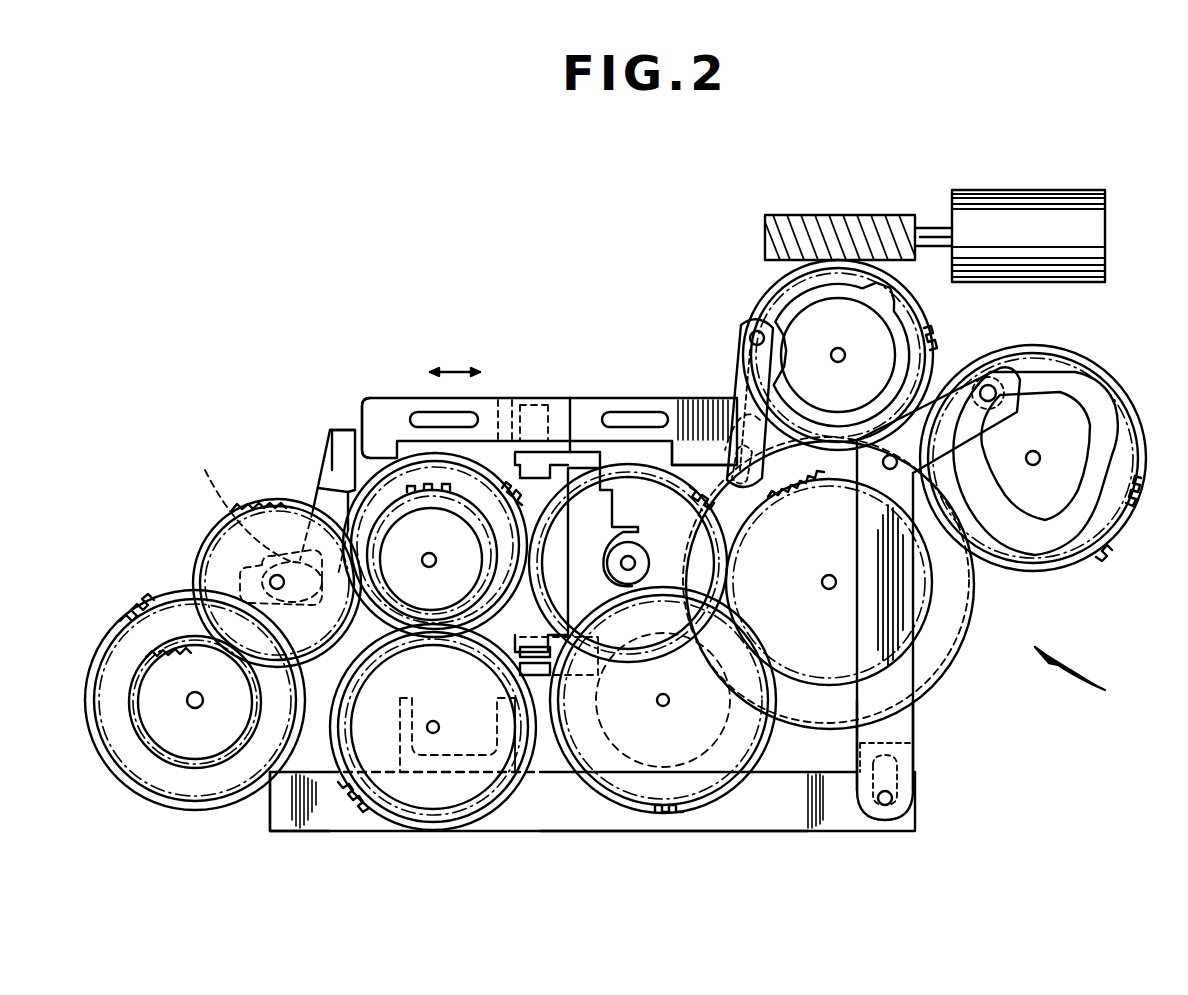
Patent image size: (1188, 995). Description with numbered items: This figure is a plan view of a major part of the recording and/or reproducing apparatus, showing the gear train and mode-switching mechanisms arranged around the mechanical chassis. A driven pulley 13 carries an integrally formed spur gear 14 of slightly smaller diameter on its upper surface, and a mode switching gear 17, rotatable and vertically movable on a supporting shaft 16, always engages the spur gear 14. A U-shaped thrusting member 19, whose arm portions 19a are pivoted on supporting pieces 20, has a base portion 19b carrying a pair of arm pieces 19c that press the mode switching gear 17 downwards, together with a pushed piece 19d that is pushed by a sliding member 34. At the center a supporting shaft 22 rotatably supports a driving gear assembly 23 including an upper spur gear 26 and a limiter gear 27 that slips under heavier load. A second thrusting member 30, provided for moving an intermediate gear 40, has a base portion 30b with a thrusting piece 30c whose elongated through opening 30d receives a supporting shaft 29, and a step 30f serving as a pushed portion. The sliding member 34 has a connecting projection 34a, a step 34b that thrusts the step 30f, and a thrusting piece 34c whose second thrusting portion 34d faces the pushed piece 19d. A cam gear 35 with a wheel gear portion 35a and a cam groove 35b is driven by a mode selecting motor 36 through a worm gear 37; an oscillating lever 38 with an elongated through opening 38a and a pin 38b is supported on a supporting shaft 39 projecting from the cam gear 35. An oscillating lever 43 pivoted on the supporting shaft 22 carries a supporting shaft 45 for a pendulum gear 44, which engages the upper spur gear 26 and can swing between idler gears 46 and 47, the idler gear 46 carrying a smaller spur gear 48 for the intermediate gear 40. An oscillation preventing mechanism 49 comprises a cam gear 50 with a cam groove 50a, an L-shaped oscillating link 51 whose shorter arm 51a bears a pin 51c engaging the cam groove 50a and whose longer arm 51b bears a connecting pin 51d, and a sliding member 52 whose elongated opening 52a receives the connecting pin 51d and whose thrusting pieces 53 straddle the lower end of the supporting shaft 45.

The driven pulley 13 is at (965, 628).
The spur gear 14 is at (927, 637).
The supporting shaft 16 is at (640, 560).
The mode switching gear 17 is at (686, 699).
The thrusting member 19 is at (585, 398).
The arm portions 19a is at (566, 398).
The base portion 19b is at (602, 606).
The arm pieces 19c is at (652, 508).
The pushed piece 19d is at (540, 405).
The supporting pieces 20 is at (540, 476).
The supporting shaft 22 is at (422, 557).
The driving gear assembly 23 is at (438, 398).
The upper spur gear 26 is at (387, 475).
The limiter gear 27 is at (427, 488).
The supporting shaft 29 is at (254, 502).
The thrusting member 30 is at (323, 483).
The base portion 30b is at (322, 486).
The thrusting piece 30c is at (239, 533).
The elongated through opening 30d is at (265, 565).
The step 30f is at (356, 418).
The sliding member 34 is at (610, 398).
The connecting projection 34a is at (724, 455).
The step 34b is at (356, 418).
The thrusting piece 34c is at (500, 400).
The second thrusting portion 34d is at (520, 398).
The cam gear 35 is at (772, 292).
The wheel gear portion 35a is at (756, 302).
The cam groove 35b is at (928, 342).
The mode selecting motor 36 is at (1038, 203).
The worm gear 37 is at (862, 222).
The oscillating lever 38 is at (750, 385).
The elongated through opening 38a is at (750, 486).
The pin 38b is at (748, 355).
The supporting shaft 39 is at (741, 325).
The intermediate gear 40 is at (272, 576).
The oscillating lever 43 is at (330, 775).
The pendulum gear 44 is at (522, 782).
The supporting shaft 45 is at (438, 722).
The idler gear 46 is at (148, 617).
The idler gear 47 is at (674, 850).
The spur gear 48 is at (158, 650).
The oscillation preventing mechanism 49 is at (1088, 678).
The cam gear 50 is at (1078, 572).
The cam groove 50a is at (1095, 520).
The oscillating link 51 is at (917, 603).
The shorter arm 51a is at (962, 465).
The longer arm 51b is at (860, 600).
The pin 51c is at (1008, 396).
The connecting pin 51d is at (893, 797).
The sliding member 52 is at (592, 833).
The elongated opening 52a is at (898, 770).
The thrusting pieces 53 is at (405, 698).